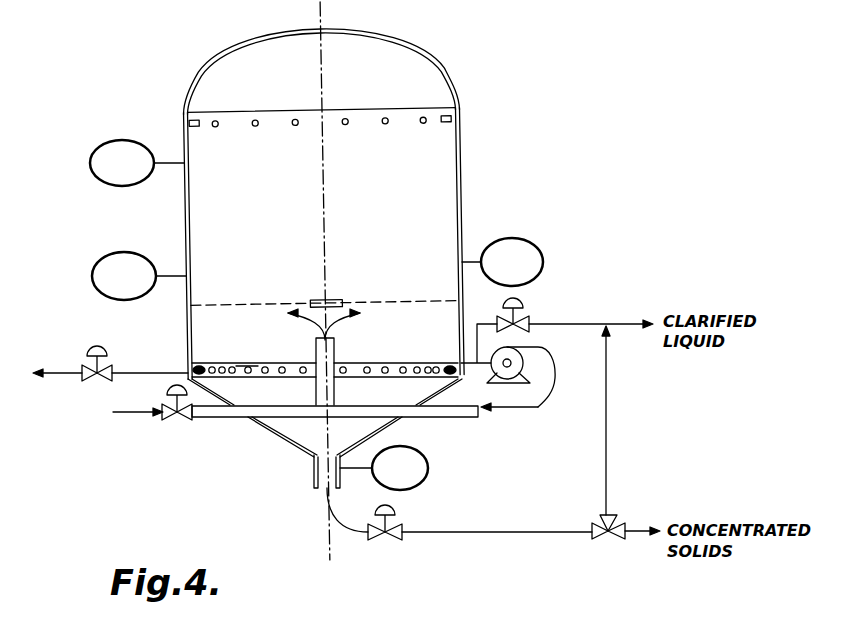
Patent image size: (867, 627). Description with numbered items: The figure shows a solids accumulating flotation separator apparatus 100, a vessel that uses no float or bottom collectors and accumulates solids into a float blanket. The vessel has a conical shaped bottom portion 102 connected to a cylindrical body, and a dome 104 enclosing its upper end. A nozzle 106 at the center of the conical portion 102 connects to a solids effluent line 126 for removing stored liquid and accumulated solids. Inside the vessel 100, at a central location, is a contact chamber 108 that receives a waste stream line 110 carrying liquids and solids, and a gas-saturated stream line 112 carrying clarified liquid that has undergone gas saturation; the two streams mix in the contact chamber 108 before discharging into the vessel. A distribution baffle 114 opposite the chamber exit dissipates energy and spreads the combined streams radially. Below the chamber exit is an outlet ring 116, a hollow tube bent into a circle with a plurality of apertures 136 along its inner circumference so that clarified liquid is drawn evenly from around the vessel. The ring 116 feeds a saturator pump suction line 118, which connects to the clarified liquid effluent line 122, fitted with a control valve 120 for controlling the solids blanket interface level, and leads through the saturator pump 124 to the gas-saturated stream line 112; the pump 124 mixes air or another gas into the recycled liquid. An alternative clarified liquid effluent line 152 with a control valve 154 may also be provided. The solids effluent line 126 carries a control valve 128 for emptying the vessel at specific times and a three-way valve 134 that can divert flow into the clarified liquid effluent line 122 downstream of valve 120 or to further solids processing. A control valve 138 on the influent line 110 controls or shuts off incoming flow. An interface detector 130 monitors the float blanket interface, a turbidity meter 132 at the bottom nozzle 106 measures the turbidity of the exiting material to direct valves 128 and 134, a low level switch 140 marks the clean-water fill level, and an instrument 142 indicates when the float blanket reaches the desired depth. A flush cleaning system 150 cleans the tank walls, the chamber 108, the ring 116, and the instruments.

The solids accumulating flotation separator apparatus 100 is at (511, 124).
The conical shaped bottom portion 102 is at (405, 422).
The dome 104 is at (443, 73).
The nozzle 106 is at (314, 469).
The contact chamber 108 is at (336, 388).
The waste stream line 110 is at (128, 416).
The gas-saturated stream line 112 is at (548, 405).
The distribution baffle 114 is at (333, 300).
The outlet ring 116 is at (228, 364).
The saturator pump suction line 118 is at (468, 355).
The control valve 120 is at (533, 322).
The clarified liquid effluent line 122 is at (620, 323).
The saturator pump 124 is at (518, 392).
The solids effluent line 126 is at (540, 532).
The control valve 128 is at (380, 542).
The interface detector 130 is at (92, 276).
The turbidity meter 132 is at (428, 482).
The three-way valve 134 is at (604, 539).
The apertures 136 is at (236, 364).
The control valve 138 is at (182, 422).
The low level switch 140 is at (542, 246).
The instrument 142 is at (90, 163).
The flush cleaning system 150 is at (450, 108).
The clarified liquid effluent line 152 is at (120, 375).
The control valve 154 is at (85, 368).